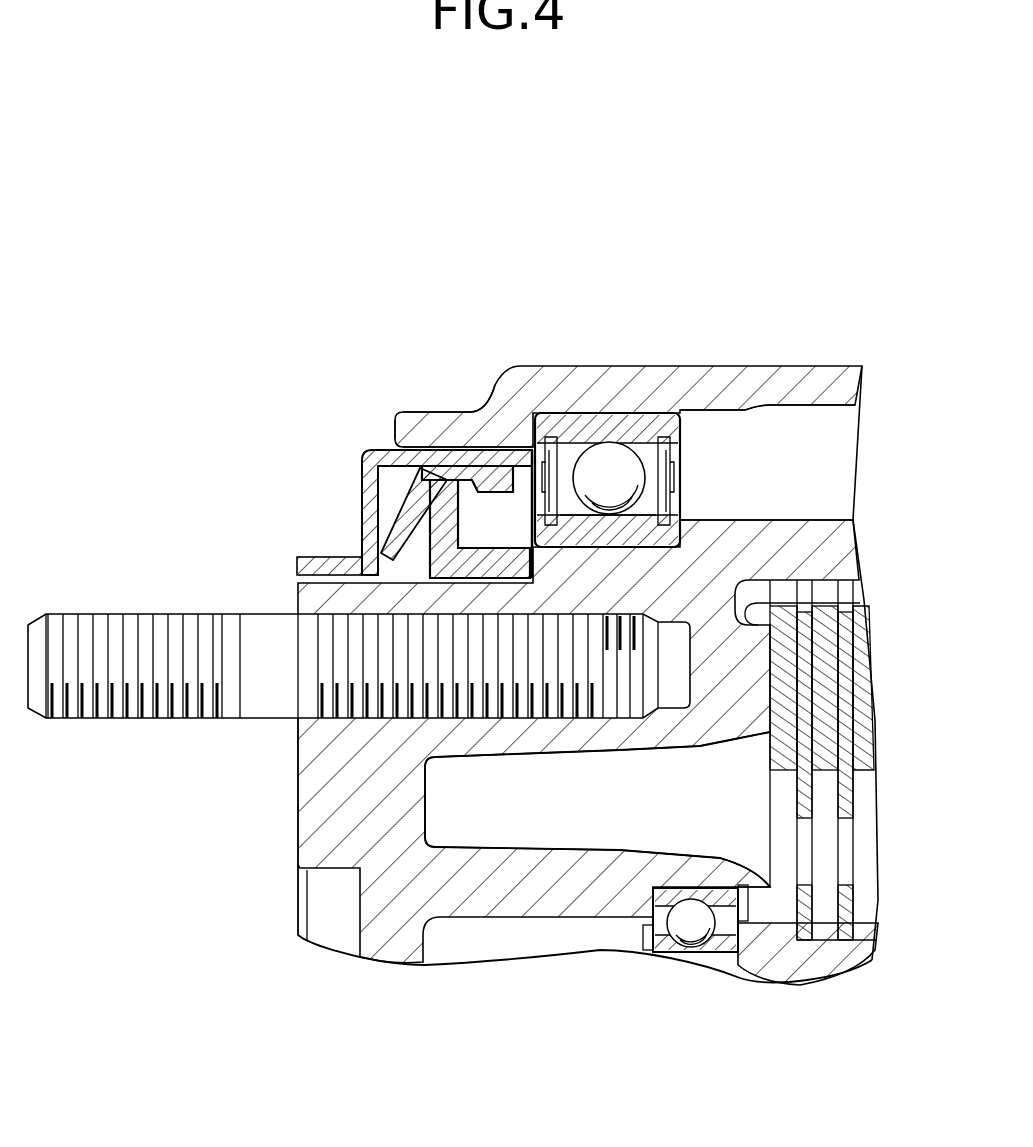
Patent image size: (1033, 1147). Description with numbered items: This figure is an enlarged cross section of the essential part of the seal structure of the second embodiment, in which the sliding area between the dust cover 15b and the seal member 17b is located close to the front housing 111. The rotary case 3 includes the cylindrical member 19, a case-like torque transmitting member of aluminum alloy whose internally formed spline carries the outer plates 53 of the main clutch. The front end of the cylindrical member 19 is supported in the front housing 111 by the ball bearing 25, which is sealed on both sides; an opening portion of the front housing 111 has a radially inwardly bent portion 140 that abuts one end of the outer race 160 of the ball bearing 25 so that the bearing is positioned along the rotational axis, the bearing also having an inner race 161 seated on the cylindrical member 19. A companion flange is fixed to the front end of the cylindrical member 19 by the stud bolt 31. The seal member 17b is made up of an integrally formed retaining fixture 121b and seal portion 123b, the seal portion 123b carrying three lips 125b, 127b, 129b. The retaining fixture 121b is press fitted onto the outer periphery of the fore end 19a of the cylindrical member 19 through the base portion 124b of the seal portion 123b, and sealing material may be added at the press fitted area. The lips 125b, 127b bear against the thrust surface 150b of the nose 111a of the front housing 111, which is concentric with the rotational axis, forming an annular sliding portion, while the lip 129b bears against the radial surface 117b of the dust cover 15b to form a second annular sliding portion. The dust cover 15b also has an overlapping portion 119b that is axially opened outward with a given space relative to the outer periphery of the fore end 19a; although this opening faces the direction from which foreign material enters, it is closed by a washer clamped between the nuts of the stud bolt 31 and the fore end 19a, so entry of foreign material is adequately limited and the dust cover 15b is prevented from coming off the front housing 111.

The front housing 111 is at (795, 362).
The nose 111a is at (425, 428).
The bent portion 140 is at (518, 440).
The thrust surface 150b is at (440, 450).
The lip 127b is at (497, 413).
The rotary case 3 is at (772, 518).
The outer race 160 is at (602, 440).
The ball bearing 25 is at (612, 458).
The bearing inner race 161 is at (685, 545).
The cylindrical member 19 is at (288, 802).
The fore end 19a is at (318, 745).
The base portion 124b is at (493, 565).
The outer plates 53 is at (730, 620).
The stud bolt 31 is at (82, 700).
The lip 125b is at (373, 450).
The dust cover 15b is at (352, 460).
The seal member 17b is at (320, 488).
The radial surface 117b is at (360, 517).
The lip 129b is at (370, 532).
The overlapping portion 119b is at (303, 572).
The retaining fixture 121b is at (512, 541).
The seal portion 123b is at (420, 548).